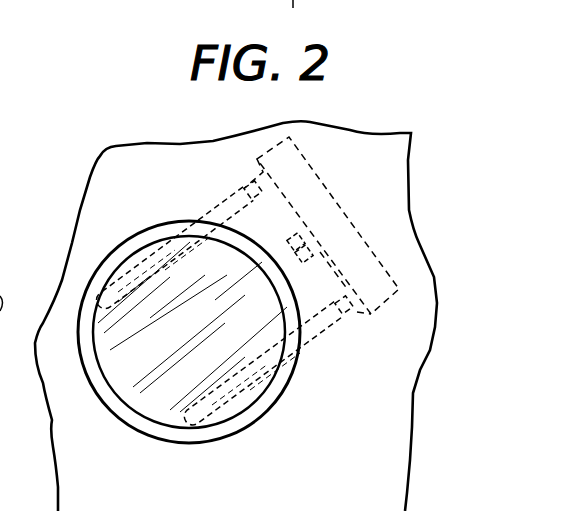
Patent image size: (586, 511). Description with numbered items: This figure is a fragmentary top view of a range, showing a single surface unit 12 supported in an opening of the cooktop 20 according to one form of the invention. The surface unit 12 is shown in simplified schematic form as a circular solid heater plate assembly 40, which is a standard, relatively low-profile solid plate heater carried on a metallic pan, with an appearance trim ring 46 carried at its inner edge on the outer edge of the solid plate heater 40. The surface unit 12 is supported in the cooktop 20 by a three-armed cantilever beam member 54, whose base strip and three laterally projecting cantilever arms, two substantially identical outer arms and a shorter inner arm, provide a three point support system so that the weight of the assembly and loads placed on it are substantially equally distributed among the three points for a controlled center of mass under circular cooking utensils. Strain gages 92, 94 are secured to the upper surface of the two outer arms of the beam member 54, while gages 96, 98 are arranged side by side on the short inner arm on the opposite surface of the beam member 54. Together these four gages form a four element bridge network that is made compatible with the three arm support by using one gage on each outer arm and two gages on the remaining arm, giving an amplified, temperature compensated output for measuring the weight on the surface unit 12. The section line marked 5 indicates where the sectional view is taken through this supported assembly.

The cooktop 20 is at (124, 171).
The surface unit 12 is at (149, 218).
The solid heater plate assembly 40 is at (141, 402).
The appearance trim ring 46 is at (215, 441).
The strain gage 92 is at (247, 184).
The strain gage 94 is at (350, 318).
The strain gage 96 is at (298, 232).
The strain gage 98 is at (310, 258).
The three-armed cantilever beam member 54 is at (340, 333).
The section line 5- 5 is at (387, 218).